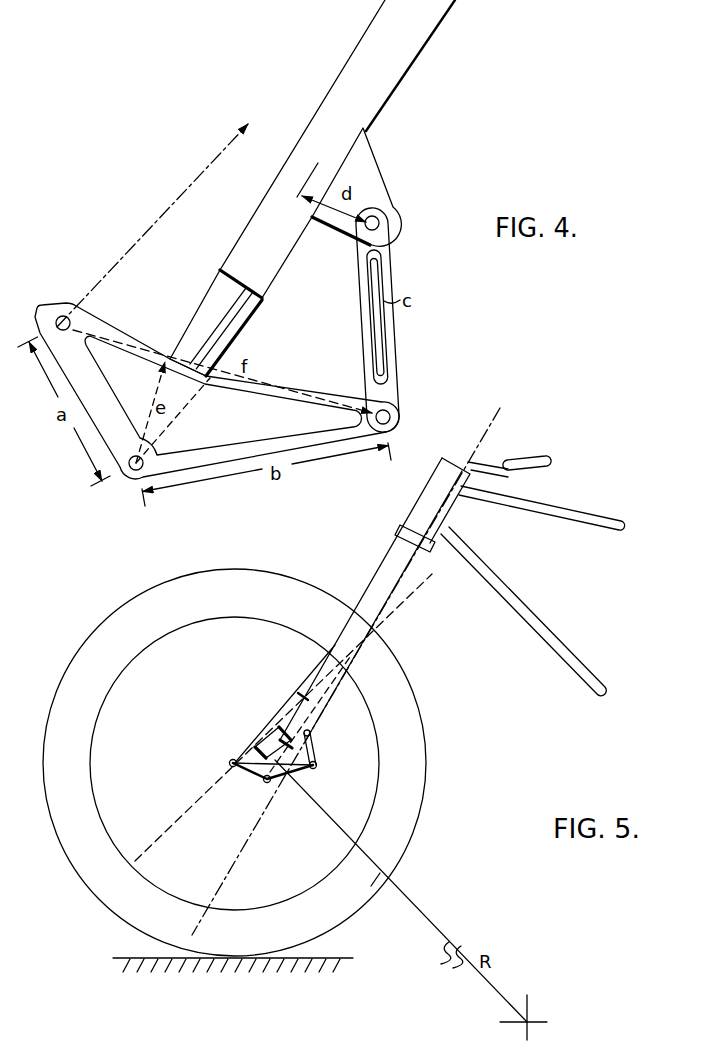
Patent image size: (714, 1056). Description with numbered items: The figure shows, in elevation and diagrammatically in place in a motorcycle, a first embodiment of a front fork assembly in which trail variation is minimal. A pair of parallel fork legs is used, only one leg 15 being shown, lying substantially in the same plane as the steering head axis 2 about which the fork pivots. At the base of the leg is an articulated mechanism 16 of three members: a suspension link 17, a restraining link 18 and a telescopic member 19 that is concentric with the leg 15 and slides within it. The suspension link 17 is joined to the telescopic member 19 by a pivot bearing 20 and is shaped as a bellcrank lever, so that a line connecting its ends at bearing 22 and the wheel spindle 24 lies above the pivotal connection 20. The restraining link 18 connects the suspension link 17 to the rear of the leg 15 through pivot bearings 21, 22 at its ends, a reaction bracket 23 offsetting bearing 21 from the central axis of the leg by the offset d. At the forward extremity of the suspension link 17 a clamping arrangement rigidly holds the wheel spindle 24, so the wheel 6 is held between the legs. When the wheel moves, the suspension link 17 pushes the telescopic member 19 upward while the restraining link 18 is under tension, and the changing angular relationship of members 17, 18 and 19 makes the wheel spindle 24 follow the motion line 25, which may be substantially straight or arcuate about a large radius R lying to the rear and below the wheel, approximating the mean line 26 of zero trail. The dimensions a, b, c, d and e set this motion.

In FIG. 5, the steering head axis 2 is at (494, 420).
In FIG. 5, the wheel 6 is at (229, 575).
In FIG. 4, the fork leg 15 is at (418, 43).
In FIG. 5, the fork leg 15 is at (375, 578).
In FIG. 4, the articulated mechanism 16 is at (191, 311).
In FIG. 4, the suspension link 17 is at (100, 368).
In FIG. 5, the suspension link 17 is at (252, 774).
In FIG. 4, the restraining link 18 is at (393, 333).
In FIG. 5, the restraining link 18 is at (318, 748).
In FIG. 4, the telescopic member 19 is at (228, 328).
In FIG. 5, the telescopic member 19 is at (272, 742).
In FIG. 4, the pivot bearing 20 is at (128, 480).
In FIG. 5, the pivot bearing 20 is at (270, 795).
In FIG. 4, the pivot bearing 21 is at (388, 226).
In FIG. 4, the pivot bearing 22 is at (400, 412).
In FIG. 5, the pivot bearing 22 is at (318, 772).
In FIG. 4, the reaction bracket 23 is at (373, 187).
In FIG. 4, the wheel spindle 24 is at (62, 318).
In FIG. 5, the wheel spindle 24 is at (229, 762).
In FIG. 4, the wheel spindle motion line 25 is at (177, 198).
In FIG. 5, the wheel spindle motion line 25 is at (304, 694).
In FIG. 5, the mean line 26 is at (417, 582).